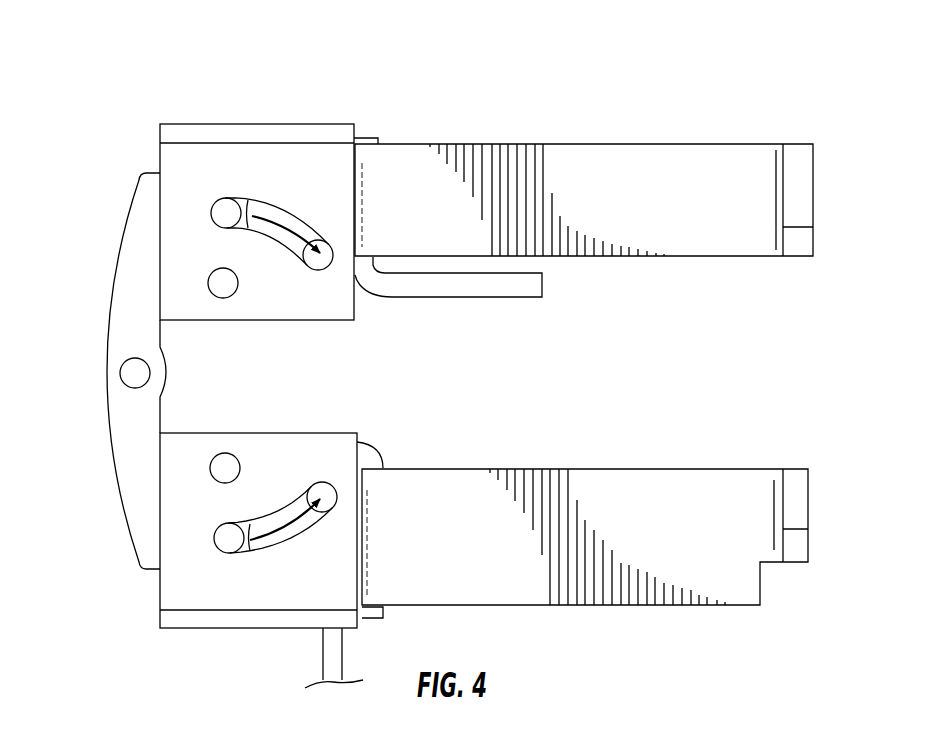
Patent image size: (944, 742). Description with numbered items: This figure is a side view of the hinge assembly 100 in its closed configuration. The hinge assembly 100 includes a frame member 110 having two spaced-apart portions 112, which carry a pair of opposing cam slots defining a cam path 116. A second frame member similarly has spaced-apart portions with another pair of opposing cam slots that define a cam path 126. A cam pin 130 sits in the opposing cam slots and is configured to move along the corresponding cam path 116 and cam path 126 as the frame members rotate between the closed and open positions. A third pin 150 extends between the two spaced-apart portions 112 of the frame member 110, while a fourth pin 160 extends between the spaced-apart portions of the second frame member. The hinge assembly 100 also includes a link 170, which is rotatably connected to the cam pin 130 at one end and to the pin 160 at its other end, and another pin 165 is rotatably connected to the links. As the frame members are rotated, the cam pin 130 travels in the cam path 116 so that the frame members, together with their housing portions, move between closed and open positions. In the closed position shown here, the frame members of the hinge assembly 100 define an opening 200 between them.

The hinge assembly 100 is at (638, 118).
The frame member 110 is at (213, 115).
The spaced-apart portions 112 is at (316, 143).
The cam path 116 is at (293, 240).
The cam path 126 is at (290, 524).
The cam pin 130 is at (228, 205).
The third pin 150 is at (224, 298).
The fourth pin 160 is at (232, 455).
The pin 165 is at (120, 373).
The link 170 is at (137, 510).
The opening 200 is at (467, 428).